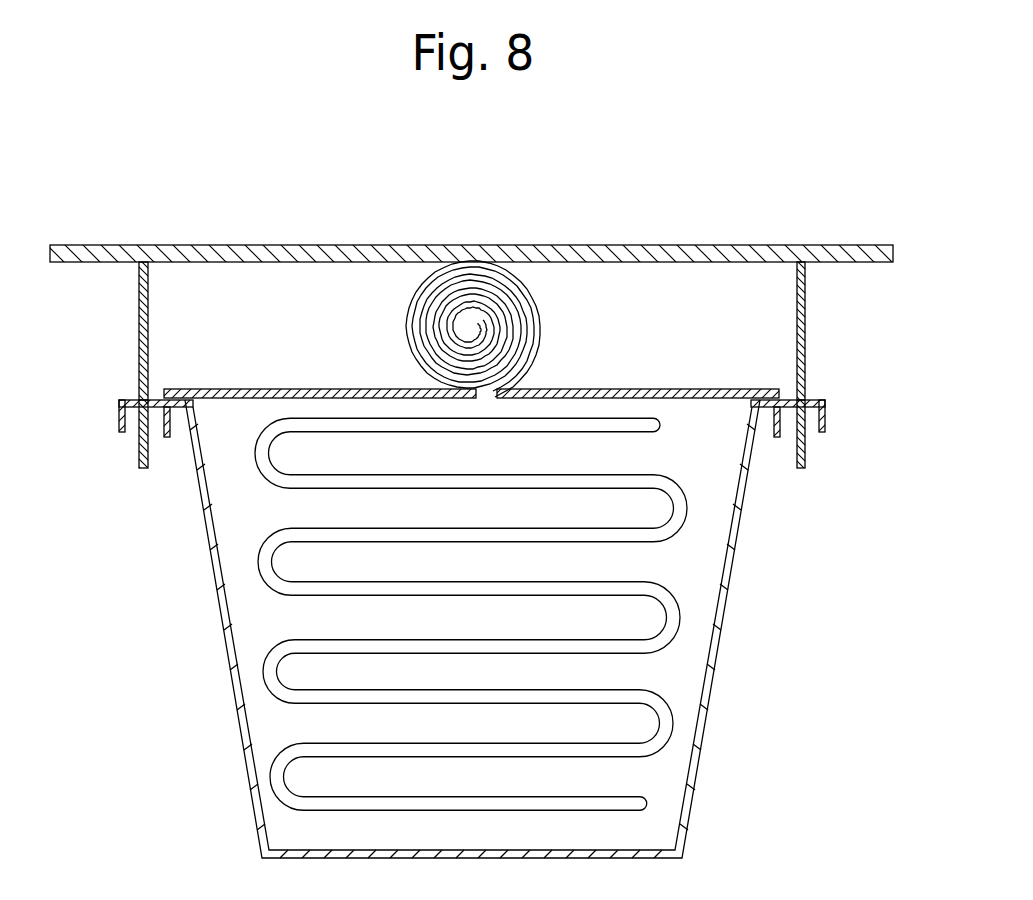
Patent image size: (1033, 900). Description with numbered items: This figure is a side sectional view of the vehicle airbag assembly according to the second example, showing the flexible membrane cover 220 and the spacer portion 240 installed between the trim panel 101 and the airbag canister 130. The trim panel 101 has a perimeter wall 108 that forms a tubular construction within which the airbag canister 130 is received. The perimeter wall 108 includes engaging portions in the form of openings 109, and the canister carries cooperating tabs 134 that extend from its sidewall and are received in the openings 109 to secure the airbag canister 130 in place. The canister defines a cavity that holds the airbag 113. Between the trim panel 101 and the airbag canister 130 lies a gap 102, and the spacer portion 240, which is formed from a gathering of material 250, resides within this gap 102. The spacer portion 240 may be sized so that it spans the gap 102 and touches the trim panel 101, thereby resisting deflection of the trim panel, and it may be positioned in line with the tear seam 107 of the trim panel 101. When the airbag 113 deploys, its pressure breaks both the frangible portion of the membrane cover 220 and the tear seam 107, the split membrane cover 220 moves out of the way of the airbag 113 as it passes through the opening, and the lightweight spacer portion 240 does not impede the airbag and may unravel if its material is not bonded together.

The trim panel 101 is at (713, 252).
The gap 102 is at (752, 285).
The tear seam 107 is at (462, 261).
The perimeter wall 108 is at (806, 300).
The openings 109 is at (806, 393).
The airbag 113 is at (666, 604).
The airbag canister 130 is at (718, 660).
The tabs 134 is at (826, 417).
The flexible membrane cover 220 is at (250, 388).
The spacer portion 240 is at (412, 297).
The gathering of material 250 is at (537, 313).